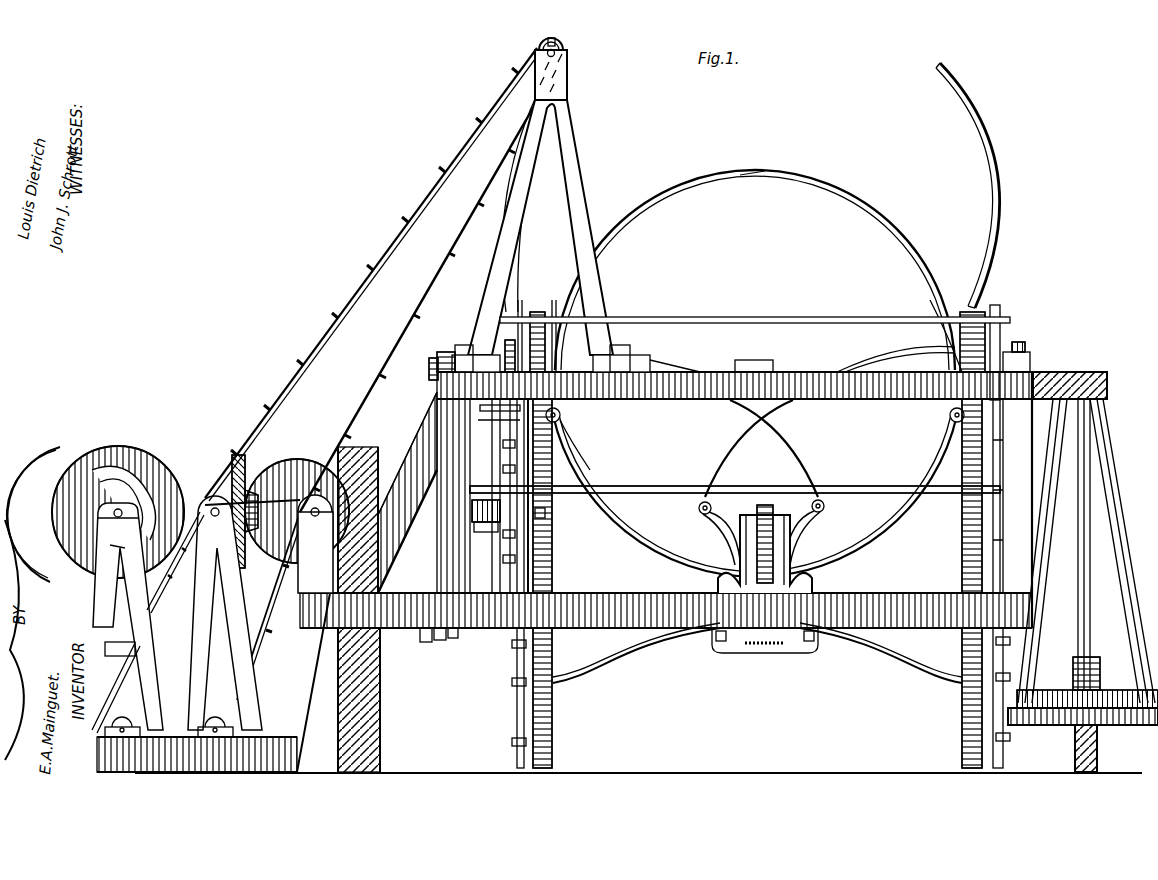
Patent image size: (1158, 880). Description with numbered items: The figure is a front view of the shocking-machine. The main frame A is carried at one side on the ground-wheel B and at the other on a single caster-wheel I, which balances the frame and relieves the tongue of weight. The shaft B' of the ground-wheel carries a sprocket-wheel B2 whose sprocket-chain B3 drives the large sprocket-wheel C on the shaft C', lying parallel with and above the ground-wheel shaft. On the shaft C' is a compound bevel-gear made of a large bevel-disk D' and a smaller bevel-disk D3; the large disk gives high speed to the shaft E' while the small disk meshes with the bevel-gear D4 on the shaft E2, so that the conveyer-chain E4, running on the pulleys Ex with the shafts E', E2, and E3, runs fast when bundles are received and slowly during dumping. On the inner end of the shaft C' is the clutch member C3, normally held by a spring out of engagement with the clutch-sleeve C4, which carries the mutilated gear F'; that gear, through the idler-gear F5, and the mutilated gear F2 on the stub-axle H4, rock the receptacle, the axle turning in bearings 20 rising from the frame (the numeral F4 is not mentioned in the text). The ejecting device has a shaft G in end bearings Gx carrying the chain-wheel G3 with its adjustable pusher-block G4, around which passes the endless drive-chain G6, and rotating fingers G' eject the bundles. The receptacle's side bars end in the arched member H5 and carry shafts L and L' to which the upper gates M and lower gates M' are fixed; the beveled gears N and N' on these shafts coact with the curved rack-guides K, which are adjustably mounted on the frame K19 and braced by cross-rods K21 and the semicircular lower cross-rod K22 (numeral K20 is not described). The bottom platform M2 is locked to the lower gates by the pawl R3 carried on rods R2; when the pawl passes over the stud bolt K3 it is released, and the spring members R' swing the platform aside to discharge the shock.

The main frame A is at (666, 494).
The ground-wheel B is at (368, 609).
The ground-wheel shaft B' is at (283, 607).
The sprocket-wheel B2 is at (452, 638).
The sprocket-chain B3 is at (427, 642).
The large sprocket-wheel C is at (407, 492).
The shaft C' is at (379, 472).
The clutch member C3 is at (478, 502).
The clutch-sleeve C4 is at (478, 540).
The large bevel-disk D' is at (250, 501).
The smaller bevel-disk D3 is at (252, 492).
The bevel-gear D4 is at (310, 458).
The shaft E' is at (225, 583).
The shaft E2 is at (316, 520).
The shaft E3 is at (560, 48).
The conveyer-chain E4 is at (410, 296).
The pulleys Ex is at (178, 560).
The mutilated gear F' is at (533, 496).
The mutilated gear F2 is at (500, 413).
The bar F4 is at (485, 424).
The idler-gear F5 is at (540, 462).
The shaft G is at (92, 616).
The fingers G' is at (134, 677).
The chain-wheel G3 is at (68, 488).
The adjustable pusher-block G4 is at (150, 458).
The endless drive-chain G6 is at (92, 458).
The end bearings Gx is at (108, 540).
The stub-axle H4 is at (430, 366).
The arched member H5 is at (746, 176).
The caster-wheel I is at (1097, 742).
The rack-guides K is at (552, 713).
The stud bolt K3 is at (766, 653).
The frame K19 is at (533, 698).
The bolt K20 is at (518, 742).
The cross-rods K21 is at (698, 316).
The cross-rod K22 is at (618, 645).
The shafts L is at (757, 324).
The shafts L' is at (755, 419).
The upper gates M is at (764, 187).
The lower gates M' is at (755, 496).
The platform M2 is at (755, 270).
The beveled gear N is at (952, 345).
The beveled gear N' is at (756, 444).
The spring members R' is at (761, 448).
The rods R2 is at (710, 517).
The pawl R3 is at (768, 514).
The bearings 20 is at (445, 352).